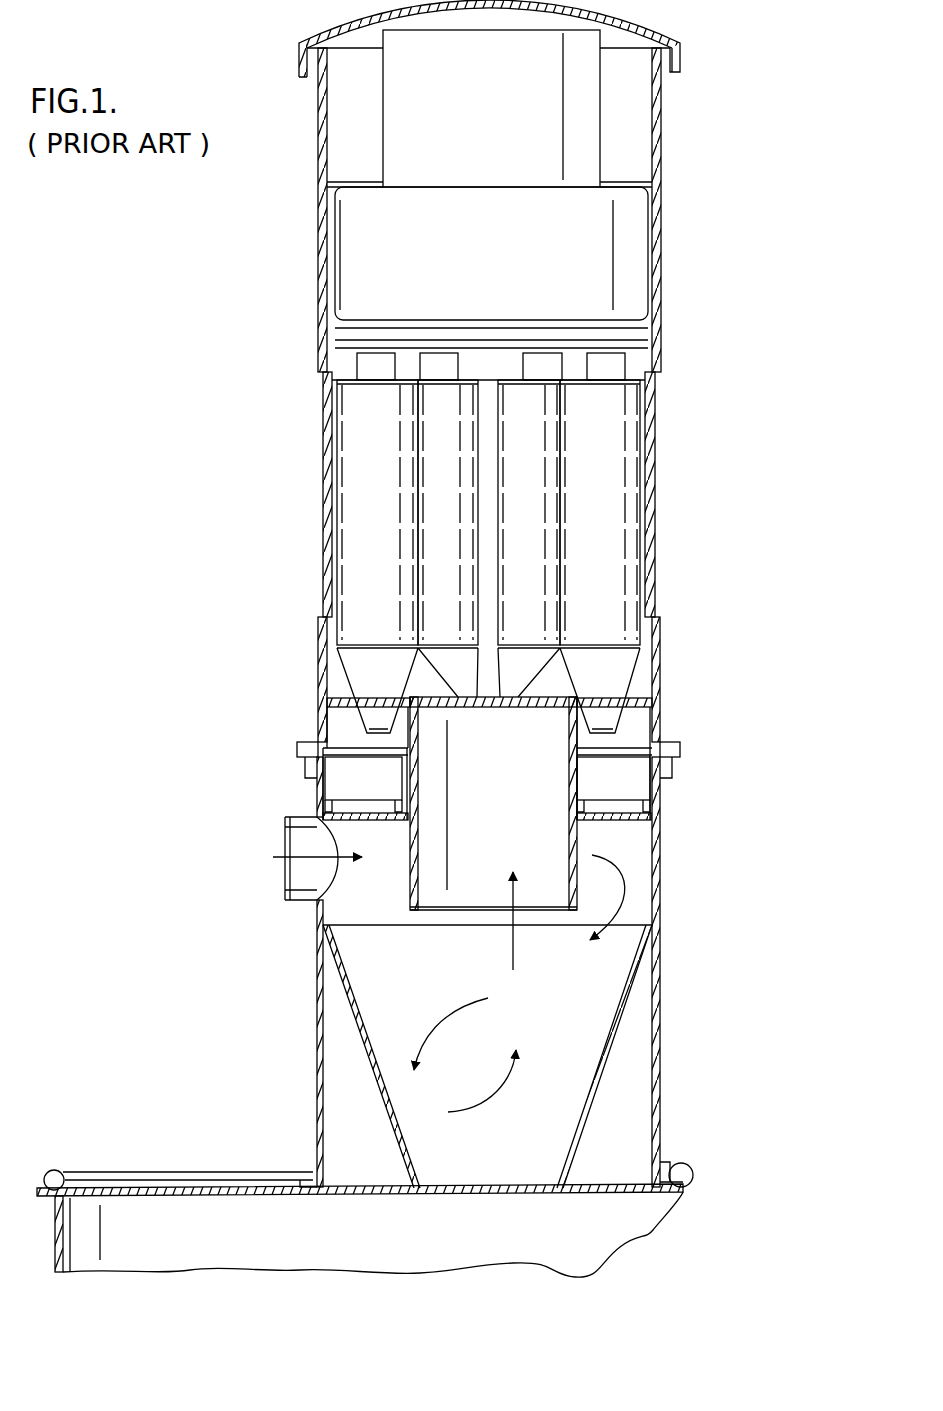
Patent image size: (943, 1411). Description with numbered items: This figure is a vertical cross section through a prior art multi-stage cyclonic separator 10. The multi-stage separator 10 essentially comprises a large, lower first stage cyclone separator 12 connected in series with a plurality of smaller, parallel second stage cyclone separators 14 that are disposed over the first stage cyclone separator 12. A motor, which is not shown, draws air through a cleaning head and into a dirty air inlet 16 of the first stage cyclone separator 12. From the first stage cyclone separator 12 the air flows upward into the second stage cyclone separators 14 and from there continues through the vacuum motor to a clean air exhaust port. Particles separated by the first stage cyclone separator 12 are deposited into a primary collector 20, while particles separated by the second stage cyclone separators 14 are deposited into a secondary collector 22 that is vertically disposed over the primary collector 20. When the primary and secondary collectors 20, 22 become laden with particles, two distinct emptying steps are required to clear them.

The multi-stage separator 10 is at (697, 463).
The first stage cyclone separator 12 is at (660, 873).
The second stage cyclone separators 14 is at (440, 532).
The dirty air inlet 16 is at (285, 870).
The primary collector 20 is at (186, 1171).
The secondary collector 22 is at (630, 782).